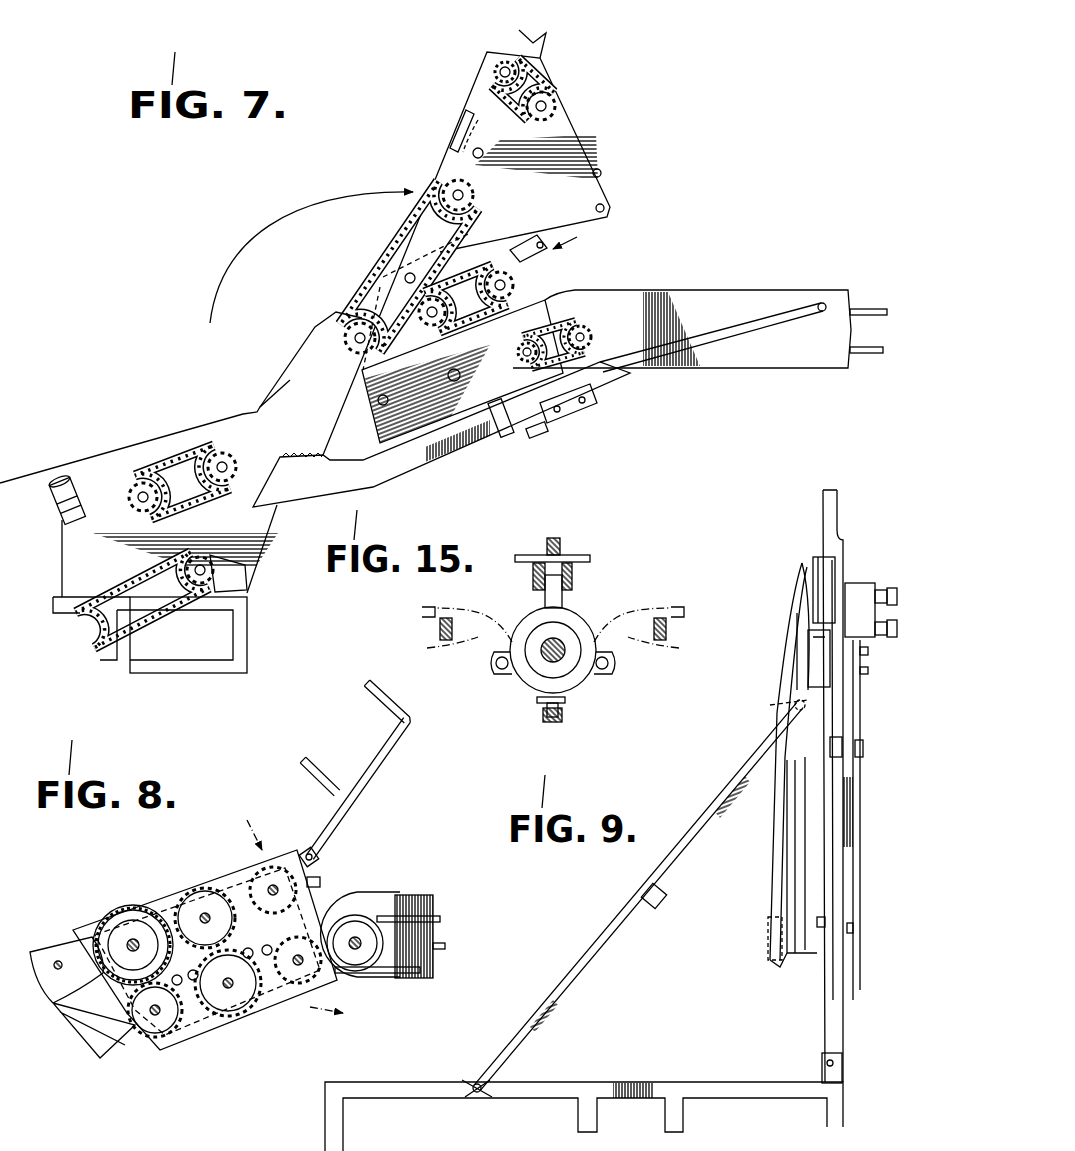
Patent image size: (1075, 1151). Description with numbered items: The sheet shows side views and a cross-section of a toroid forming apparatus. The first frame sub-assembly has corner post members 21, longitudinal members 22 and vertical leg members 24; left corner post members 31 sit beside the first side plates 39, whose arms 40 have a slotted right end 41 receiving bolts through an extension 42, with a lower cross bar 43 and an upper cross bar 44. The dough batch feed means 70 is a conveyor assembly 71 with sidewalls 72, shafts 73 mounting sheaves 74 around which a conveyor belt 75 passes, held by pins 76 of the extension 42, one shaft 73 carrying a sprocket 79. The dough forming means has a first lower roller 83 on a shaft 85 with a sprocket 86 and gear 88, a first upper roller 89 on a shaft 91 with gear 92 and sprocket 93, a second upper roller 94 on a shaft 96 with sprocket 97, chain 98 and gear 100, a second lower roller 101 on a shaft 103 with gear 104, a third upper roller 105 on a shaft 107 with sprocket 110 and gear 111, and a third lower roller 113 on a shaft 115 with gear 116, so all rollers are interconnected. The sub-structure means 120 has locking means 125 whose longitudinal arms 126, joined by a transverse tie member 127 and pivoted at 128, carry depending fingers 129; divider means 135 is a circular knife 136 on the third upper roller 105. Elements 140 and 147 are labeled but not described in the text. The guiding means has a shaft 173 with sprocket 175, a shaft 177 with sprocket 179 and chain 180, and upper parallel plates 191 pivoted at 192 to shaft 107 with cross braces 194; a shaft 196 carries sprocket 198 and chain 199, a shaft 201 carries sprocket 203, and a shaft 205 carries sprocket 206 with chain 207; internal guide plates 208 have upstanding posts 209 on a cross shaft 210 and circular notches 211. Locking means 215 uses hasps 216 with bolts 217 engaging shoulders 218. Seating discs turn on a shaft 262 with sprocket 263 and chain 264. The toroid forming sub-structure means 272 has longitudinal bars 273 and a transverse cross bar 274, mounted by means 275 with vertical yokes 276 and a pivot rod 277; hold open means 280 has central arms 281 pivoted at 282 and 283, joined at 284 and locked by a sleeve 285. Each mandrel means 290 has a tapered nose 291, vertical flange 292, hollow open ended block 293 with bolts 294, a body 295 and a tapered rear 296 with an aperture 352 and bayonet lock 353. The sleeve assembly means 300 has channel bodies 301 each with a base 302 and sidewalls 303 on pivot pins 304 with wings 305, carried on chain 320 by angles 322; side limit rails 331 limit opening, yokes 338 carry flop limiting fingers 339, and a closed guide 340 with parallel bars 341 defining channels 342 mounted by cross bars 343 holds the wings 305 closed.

In FIG. 9, the corner post members 21 is at (843, 1110).
In FIG. 7, the longitudinal members 22 is at (62, 612).
In FIG. 9, the longitudinal members 22 is at (400, 1095).
In FIG. 7, the vertical leg members 24 is at (132, 640).
In FIG. 9, the vertical leg members 24 is at (578, 1117).
In FIG. 7, the left corner post members 31 is at (247, 630).
In FIG. 7, the first side plates 39 is at (265, 540).
In FIG. 8, the first side plates 39 is at (80, 1030).
In FIG. 7, the arm 40 is at (405, 470).
In FIG. 7, the slotted right end 41 is at (582, 410).
In FIG. 7, the extension 42 is at (655, 372).
In FIG. 7, the lower cross bar 43 is at (545, 435).
In FIG. 7, the upper cross bar 44 is at (498, 437).
In FIG. 7, the dough batch feed means 70 is at (776, 270).
In FIG. 8, the dough batch feed means 70 is at (428, 882).
In FIG. 7, the conveyor assembly 71 is at (708, 283).
In FIG. 7, the sidewalls 72 is at (795, 350).
In FIG. 8, the sidewalls 72 is at (438, 945).
In FIG. 7, the shafts 73 is at (582, 326).
In FIG. 8, the shafts 73 is at (362, 945).
In FIG. 8, the sheaves 74 is at (352, 920).
In FIG. 7, the conveyor belt 75 is at (865, 357).
In FIG. 8, the conveyor belt 75 is at (440, 917).
In FIG. 7, the pins 76 is at (828, 302).
In FIG. 7, the sprocket 79 is at (590, 345).
In FIG. 8, the first lower roller 83 is at (345, 983).
In FIG. 7, the shaft 85 is at (520, 365).
In FIG. 8, the shaft 85 is at (312, 983).
In FIG. 7, the sprocket 86 is at (527, 345).
In FIG. 8, the gear 88 is at (320, 887).
In FIG. 8, the first upper roller 89 is at (312, 876).
In FIG. 7, the shaft 91 is at (548, 300).
In FIG. 8, the shaft 91 is at (273, 896).
In FIG. 8, the gear 92 is at (265, 845).
In FIG. 7, the sprocket 93 is at (545, 258).
In FIG. 8, the second upper roller 94 is at (190, 895).
In FIG. 7, the shaft 96 is at (440, 320).
In FIG. 8, the shaft 96 is at (203, 924).
In FIG. 7, the sprocket 97 is at (430, 312).
In FIG. 7, the chain 98 is at (460, 270).
In FIG. 8, the gear 100 is at (215, 870).
In FIG. 8, the second lower roller 101 is at (258, 976).
In FIG. 7, the shaft 103 is at (454, 381).
In FIG. 8, the shaft 103 is at (228, 1012).
In FIG. 8, the gear 104 is at (200, 1045).
In FIG. 8, the third upper roller 105 is at (140, 920).
In FIG. 7, the shaft 107 is at (355, 330).
In FIG. 8, the shaft 107 is at (160, 960).
In FIG. 7, the sprocket 110 is at (350, 345).
In FIG. 8, the gear 111 is at (40, 975).
In FIG. 8, the third lower roller 113 is at (155, 1010).
In FIG. 7, the shaft 115 is at (388, 403).
In FIG. 8, the shaft 115 is at (163, 1035).
In FIG. 8, the gear 116 is at (140, 1030).
In FIG. 7, the sub-structure means 120 is at (577, 220).
In FIG. 7, the locking means 125 is at (581, 236).
In FIG. 8, the locking means 125 is at (410, 722).
In FIG. 8, the longitudinal arms 126 is at (372, 762).
In FIG. 8, the transverse tie member 127 is at (318, 850).
In FIG. 8, the pivot 128 is at (318, 858).
In FIG. 8, the depending fingers 129 is at (375, 695).
In FIG. 8, the divider means 135 is at (105, 910).
In FIG. 8, the circular knife 136 is at (110, 912).
In FIG. 8, the arm 140 is at (80, 1020).
In FIG. 7, the frame step 147 is at (262, 413).
In FIG. 7, the shaft 173 is at (262, 470).
In FIG. 7, the sprocket 175 is at (228, 465).
In FIG. 7, the shaft 177 is at (145, 490).
In FIG. 7, the sprocket 179 is at (180, 508).
In FIG. 7, the chain 180 is at (172, 455).
In FIG. 7, the upper parallel plates 191 is at (583, 140).
In FIG. 8, the upper parallel plates 191 is at (30, 945).
In FIG. 7, the pivot 192 is at (355, 338).
In FIG. 7, the cross braces 194 is at (403, 277).
In FIG. 8, the cross braces 194 is at (70, 945).
In FIG. 7, the shaft 196 is at (462, 178).
In FIG. 7, the sprocket 198 is at (476, 205).
In FIG. 7, the chain 199 is at (412, 230).
In FIG. 7, the shaft 201 is at (547, 107).
In FIG. 7, the sprocket 203 is at (550, 100).
In FIG. 7, the shaft 205 is at (500, 62).
In FIG. 7, the sprocket 206 is at (495, 72).
In FIG. 7, the chain 207 is at (545, 75).
In FIG. 7, the internal guide plates 208 is at (458, 132).
In FIG. 7, the upstanding post 209 is at (478, 118).
In FIG. 7, the cross shaft 210 is at (482, 158).
In FIG. 7, the circular notches 211 is at (420, 178).
In FIG. 7, the locking means 215 is at (77, 480).
In FIG. 7, the hasps 216 is at (80, 500).
In FIG. 7, the bolt 217 is at (62, 480).
In FIG. 7, the shoulder 218 is at (540, 37).
In FIG. 7, the shaft 262 is at (215, 565).
In FIG. 7, the sprocket 263 is at (240, 585).
In FIG. 7, the chain 264 is at (140, 570).
In FIG. 9, the sub-structure means 272 is at (845, 962).
In FIG. 15, the longitudinal bars 273 is at (560, 545).
In FIG. 9, the longitudinal bars 273 is at (857, 857).
In FIG. 9, the transverse cross bar 274 is at (840, 706).
In FIG. 9, the mounting means 275 is at (847, 1052).
In FIG. 9, the vertical yokes 276 is at (843, 1078).
In FIG. 9, the pivot rod 277 is at (822, 1062).
In FIG. 9, the hold open means 280 is at (705, 817).
In FIG. 9, the central arms 281 is at (705, 855).
In FIG. 9, the pivot 282 is at (472, 1082).
In FIG. 9, the pivot 283 is at (770, 701).
In FIG. 9, the pivot 284 is at (662, 905).
In FIG. 9, the sleeve 285 is at (648, 890).
In FIG. 9, the mandrel means 290 is at (778, 677).
In FIG. 9, the tapered nose 291 is at (795, 605).
In FIG. 9, the vertical flange 292 is at (803, 580).
In FIG. 9, the hollow open ended block 293 is at (852, 583).
In FIG. 9, the bolts 294 is at (895, 625).
In FIG. 9, the body 295 is at (775, 738).
In FIG. 9, the tapered rear 296 is at (768, 930).
In FIG. 15, the sleeve assembly means 300 is at (595, 695).
In FIG. 15, the channel bodies 301 is at (520, 675).
In FIG. 15, the base 302 is at (540, 700).
In FIG. 15, the sidewalls 303 is at (530, 620).
In FIG. 15, the pivot pins 304 is at (495, 662).
In FIG. 15, the wings 305 is at (535, 585).
In FIG. 15, the chain 320 is at (545, 720).
In FIG. 15, the angles 322 is at (562, 708).
In FIG. 15, the side limit rails 331 is at (440, 628).
In FIG. 9, the yokes 338 is at (820, 668).
In FIG. 9, the flop limiting fingers 339 is at (830, 528).
In FIG. 15, the closed guide 340 is at (527, 523).
In FIG. 15, the parallel bars 341 is at (536, 563).
In FIG. 9, the parallel bars 341 is at (845, 785).
In FIG. 15, the channels 342 is at (572, 558).
In FIG. 15, the cross bars 343 is at (542, 538).
In FIG. 9, the aperture 352 is at (768, 962).
In FIG. 9, the bayonet lock 353 is at (780, 970).